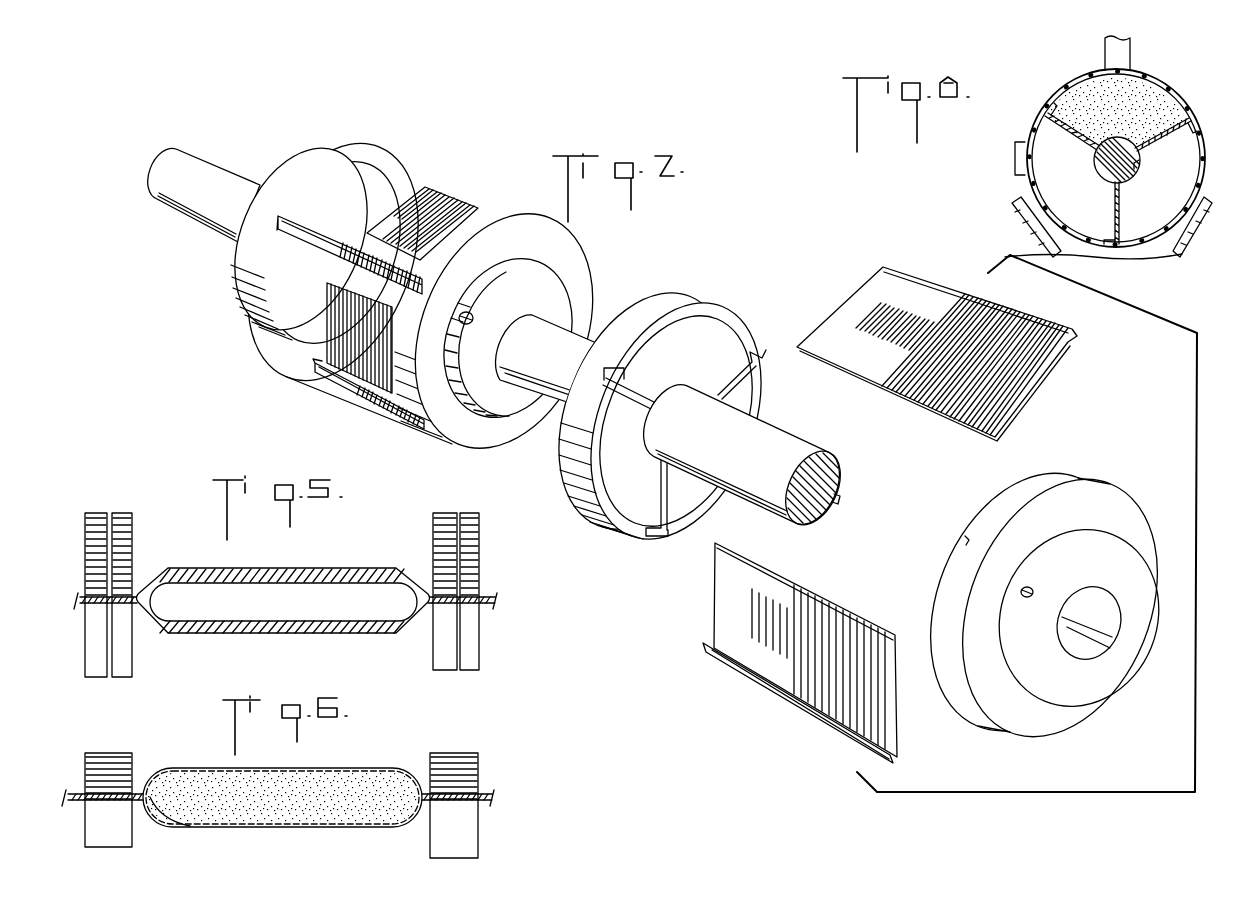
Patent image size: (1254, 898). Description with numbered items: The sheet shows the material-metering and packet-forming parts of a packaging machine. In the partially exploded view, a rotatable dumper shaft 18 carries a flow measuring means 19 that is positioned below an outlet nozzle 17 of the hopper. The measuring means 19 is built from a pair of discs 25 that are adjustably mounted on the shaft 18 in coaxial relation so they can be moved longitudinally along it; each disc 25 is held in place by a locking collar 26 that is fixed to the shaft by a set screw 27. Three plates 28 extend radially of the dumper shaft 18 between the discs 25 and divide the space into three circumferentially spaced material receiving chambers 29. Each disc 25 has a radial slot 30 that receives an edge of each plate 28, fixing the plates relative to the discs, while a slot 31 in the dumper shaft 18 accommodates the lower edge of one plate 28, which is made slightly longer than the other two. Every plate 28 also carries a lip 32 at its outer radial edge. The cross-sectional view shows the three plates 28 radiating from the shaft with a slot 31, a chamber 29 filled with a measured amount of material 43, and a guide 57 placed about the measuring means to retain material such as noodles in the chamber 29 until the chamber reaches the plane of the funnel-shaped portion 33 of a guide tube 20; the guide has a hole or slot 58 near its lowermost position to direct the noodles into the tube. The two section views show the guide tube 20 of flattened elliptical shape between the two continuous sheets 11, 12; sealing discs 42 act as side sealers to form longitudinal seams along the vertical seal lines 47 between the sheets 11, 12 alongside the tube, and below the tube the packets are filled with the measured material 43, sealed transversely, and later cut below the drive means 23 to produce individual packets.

In FIG. 5, the continuous sheet 11 is at (298, 568).
In FIG. 6, the continuous sheet 11 is at (297, 769).
In FIG. 5, the continuous sheet 12 is at (278, 636).
In FIG. 6, the continuous sheet 12 is at (316, 829).
In FIG. 8, the outlet nozzle 17 is at (1131, 52).
In FIG. 7, the dumper shaft 18 is at (206, 232).
In FIG. 7, the flow measuring means 19 is at (487, 185).
In FIG. 5, the guide tube 20 is at (283, 602).
In FIG. 6, the drive means 23 is at (90, 762).
In FIG. 7, the disc 25 is at (392, 160).
In FIG. 7, the locking collar 26 is at (263, 182).
In FIG. 7, the set screw 27 is at (474, 316).
In FIG. 7, the plate 28 is at (466, 216).
In FIG. 8, the plate 28 is at (1078, 140).
In FIG. 8, the material receiving chamber 29 is at (1132, 121).
In FIG. 7, the radial slot 30 is at (638, 398).
In FIG. 7, the slot 31 is at (838, 502).
In FIG. 8, the slot 31 is at (1142, 166).
In FIG. 7, the lip 32 is at (340, 384).
In FIG. 8, the lip 32 is at (1106, 238).
In FIG. 8, the funnel-shaped portion 33 is at (1031, 226).
In FIG. 5, the sealing disc 42 is at (88, 572).
In FIG. 8, the measured amount of material 43 is at (1152, 121).
In FIG. 6, the measured amount of material 43 is at (240, 806).
In FIG. 5, the vertical seal line 47 is at (492, 600).
In FIG. 6, the vertical seal line 47 is at (493, 796).
In FIG. 8, the guide 57 is at (1205, 160).
In FIG. 8, the hole or slot 58 is at (1198, 229).